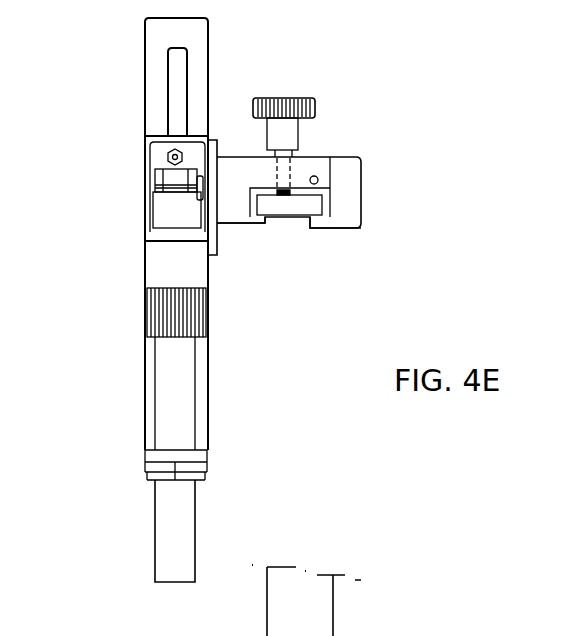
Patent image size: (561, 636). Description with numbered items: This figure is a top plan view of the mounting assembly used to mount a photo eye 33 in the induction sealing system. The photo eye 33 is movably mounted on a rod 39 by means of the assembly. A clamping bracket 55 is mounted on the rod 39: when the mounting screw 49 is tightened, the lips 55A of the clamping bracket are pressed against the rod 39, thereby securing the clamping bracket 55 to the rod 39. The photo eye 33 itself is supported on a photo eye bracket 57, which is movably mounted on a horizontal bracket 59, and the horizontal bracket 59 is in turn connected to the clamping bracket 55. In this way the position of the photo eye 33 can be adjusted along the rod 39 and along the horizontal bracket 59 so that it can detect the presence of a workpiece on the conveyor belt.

The photo eye bracket 57 is at (147, 46).
The horizontal bracket 59 is at (219, 138).
The mounting screw 49 is at (282, 97).
The clamping bracket 55 is at (350, 193).
The lips 55A is at (257, 229).
The rod 39 is at (287, 215).
The photo eye 33 is at (162, 533).